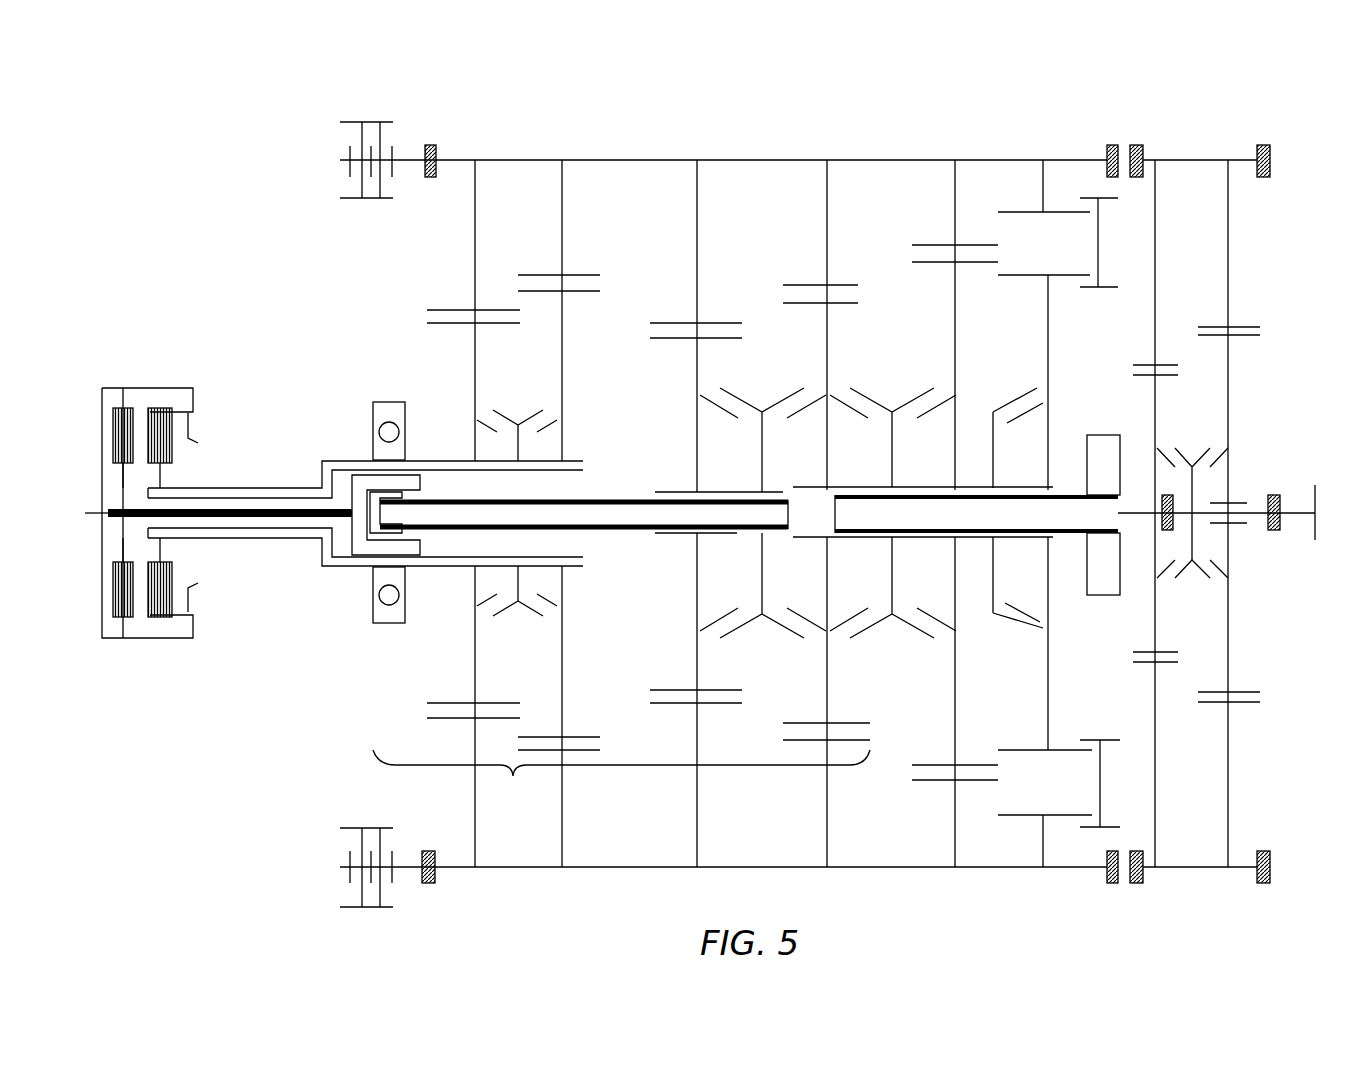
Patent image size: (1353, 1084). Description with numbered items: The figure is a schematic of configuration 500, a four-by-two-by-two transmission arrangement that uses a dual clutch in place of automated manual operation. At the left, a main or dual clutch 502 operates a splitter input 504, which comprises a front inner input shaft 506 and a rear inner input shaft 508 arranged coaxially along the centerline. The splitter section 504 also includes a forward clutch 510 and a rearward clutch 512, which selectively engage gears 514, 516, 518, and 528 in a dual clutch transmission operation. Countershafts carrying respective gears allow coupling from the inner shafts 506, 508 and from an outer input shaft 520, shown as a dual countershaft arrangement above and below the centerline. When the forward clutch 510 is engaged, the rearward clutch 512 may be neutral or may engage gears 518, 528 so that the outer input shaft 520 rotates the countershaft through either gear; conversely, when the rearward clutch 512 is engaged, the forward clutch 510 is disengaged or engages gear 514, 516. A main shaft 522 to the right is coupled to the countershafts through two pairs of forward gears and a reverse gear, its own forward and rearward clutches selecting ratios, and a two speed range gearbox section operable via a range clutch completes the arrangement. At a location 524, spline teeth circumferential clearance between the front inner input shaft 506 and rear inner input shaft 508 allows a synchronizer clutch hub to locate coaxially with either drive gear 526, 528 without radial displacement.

The configuration 500 is at (917, 93).
The main or dual clutch 502 is at (204, 379).
The splitter input section 504 is at (621, 781).
The front inner input shaft 506 is at (240, 492).
The rear inner input shaft 508 is at (432, 550).
The forward clutch 510 is at (515, 617).
The rearward clutch 512 is at (763, 386).
The gear 514 is at (473, 662).
The gear 516 is at (568, 668).
The gear 518 is at (700, 688).
The outer input shaft 520 is at (338, 461).
The main shaft 522 is at (992, 540).
The location 524 is at (353, 522).
The drive gear 526 is at (690, 372).
The drive gear 528 is at (830, 345).